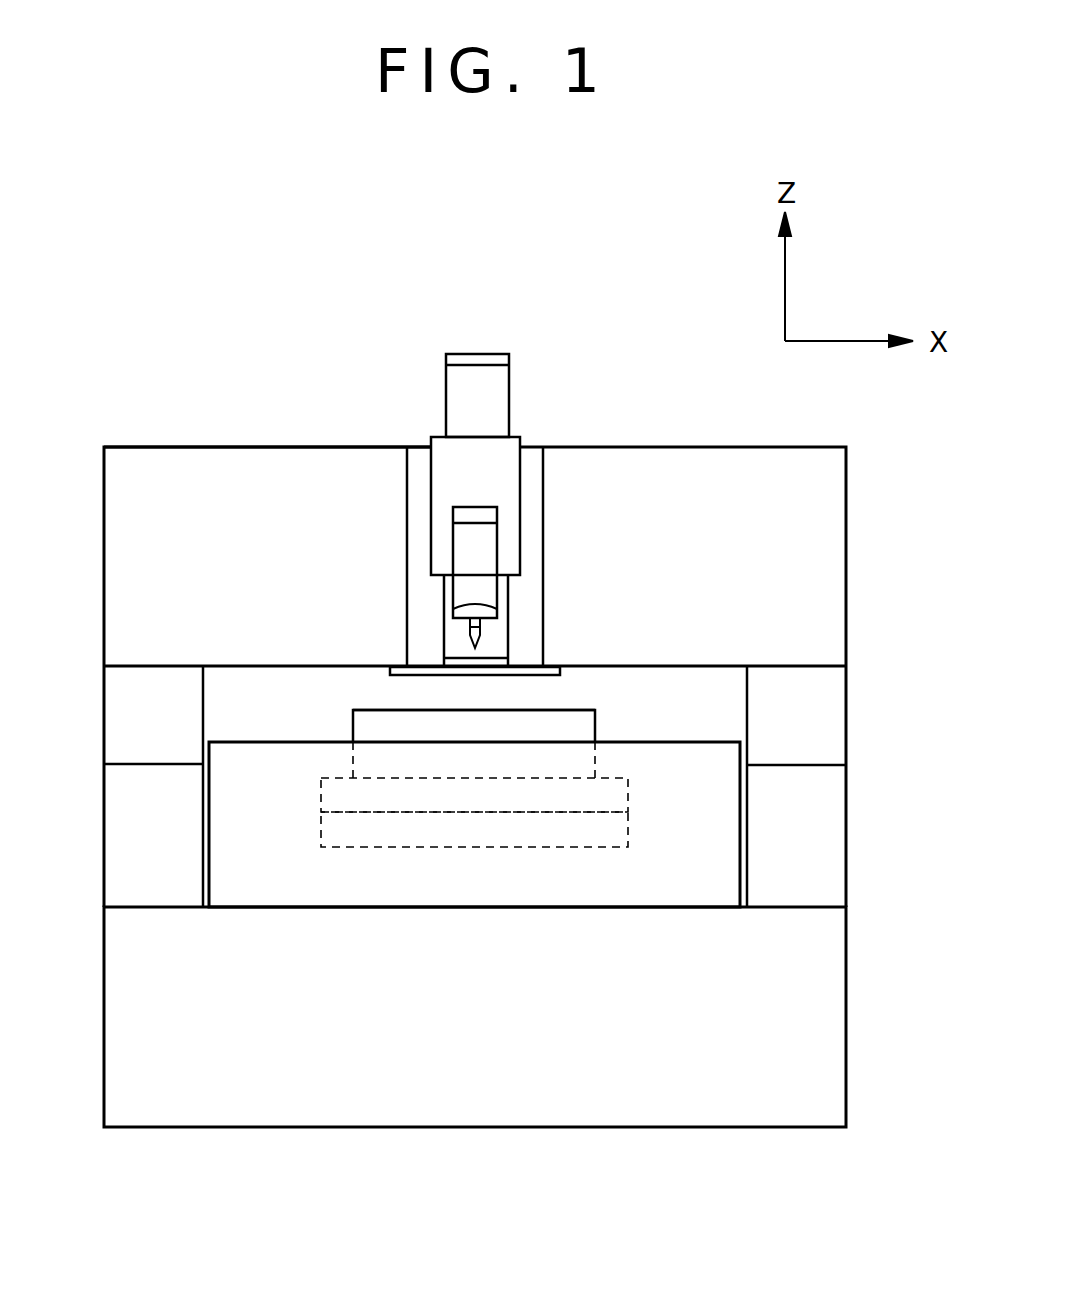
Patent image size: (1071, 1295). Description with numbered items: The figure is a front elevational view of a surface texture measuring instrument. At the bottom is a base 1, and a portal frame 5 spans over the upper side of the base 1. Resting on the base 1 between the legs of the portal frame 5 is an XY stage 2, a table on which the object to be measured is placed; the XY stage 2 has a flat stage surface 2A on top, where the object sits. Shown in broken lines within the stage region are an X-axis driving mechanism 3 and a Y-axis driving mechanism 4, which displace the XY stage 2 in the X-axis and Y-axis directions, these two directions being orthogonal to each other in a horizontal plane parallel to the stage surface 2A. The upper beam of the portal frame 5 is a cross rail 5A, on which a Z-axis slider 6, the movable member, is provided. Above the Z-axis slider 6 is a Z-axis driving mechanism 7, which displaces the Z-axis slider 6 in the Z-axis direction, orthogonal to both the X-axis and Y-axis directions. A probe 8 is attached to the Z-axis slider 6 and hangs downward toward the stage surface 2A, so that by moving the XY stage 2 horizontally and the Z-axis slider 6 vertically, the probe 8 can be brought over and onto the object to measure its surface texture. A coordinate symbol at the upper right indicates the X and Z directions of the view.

The base 1 is at (678, 1128).
The XY stage 2 is at (352, 727).
The stage surface 2A is at (574, 710).
The X-axis driving mechanism 3 is at (629, 795).
The Y-axis driving mechanism 4 is at (629, 826).
The portal frame 5 is at (103, 706).
The cross rail 5A is at (183, 446).
The Z-axis slider 6 is at (520, 440).
The Z-axis driving mechanism 7 is at (509, 383).
The probe 8 is at (488, 548).